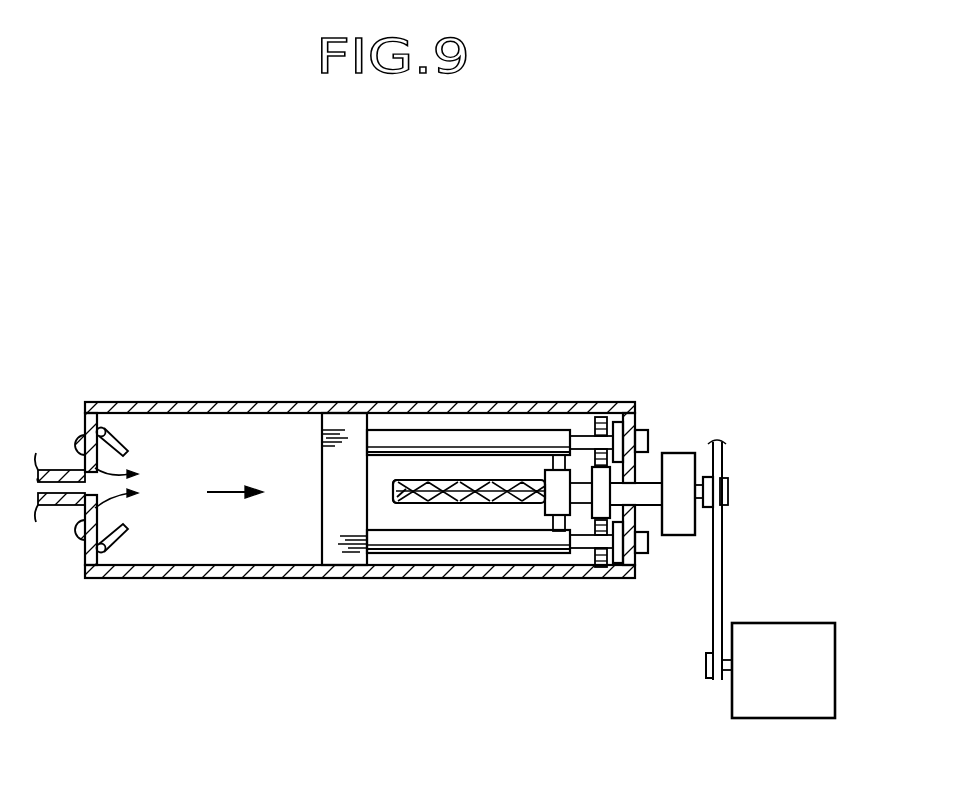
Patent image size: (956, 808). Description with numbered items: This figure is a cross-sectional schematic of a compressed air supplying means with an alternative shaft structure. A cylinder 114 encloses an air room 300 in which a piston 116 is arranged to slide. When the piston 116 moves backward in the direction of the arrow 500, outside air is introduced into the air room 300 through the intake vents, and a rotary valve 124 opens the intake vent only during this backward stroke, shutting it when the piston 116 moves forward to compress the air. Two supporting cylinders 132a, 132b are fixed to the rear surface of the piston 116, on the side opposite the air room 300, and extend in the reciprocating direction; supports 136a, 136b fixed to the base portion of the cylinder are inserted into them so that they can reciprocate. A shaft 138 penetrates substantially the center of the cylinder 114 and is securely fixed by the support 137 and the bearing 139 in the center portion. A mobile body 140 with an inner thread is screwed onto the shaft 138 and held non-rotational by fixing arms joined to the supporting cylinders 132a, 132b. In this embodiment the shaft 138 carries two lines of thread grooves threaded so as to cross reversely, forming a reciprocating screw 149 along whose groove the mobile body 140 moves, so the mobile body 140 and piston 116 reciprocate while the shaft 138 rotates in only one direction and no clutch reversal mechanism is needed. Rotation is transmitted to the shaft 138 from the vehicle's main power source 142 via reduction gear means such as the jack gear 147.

The air room 300 is at (177, 437).
The piston 116 is at (321, 452).
The supporting cylinder 132a is at (400, 431).
The cylinder 114 is at (450, 402).
The support 136a is at (585, 437).
The bearing 139 is at (583, 420).
The jack gear 147 is at (678, 453).
The main power source 142 is at (752, 623).
The rotary valve 124 is at (133, 533).
The reciprocating screw 149 is at (395, 504).
The shaft 138 is at (418, 504).
The supporting cylinder 132b is at (528, 554).
The mobile body 140 is at (543, 513).
The support 137 is at (602, 582).
The support 136b is at (581, 580).
The arrow 500 is at (232, 495).